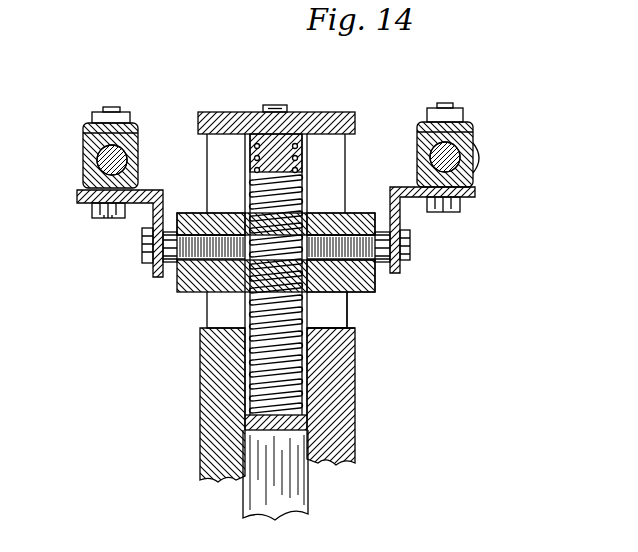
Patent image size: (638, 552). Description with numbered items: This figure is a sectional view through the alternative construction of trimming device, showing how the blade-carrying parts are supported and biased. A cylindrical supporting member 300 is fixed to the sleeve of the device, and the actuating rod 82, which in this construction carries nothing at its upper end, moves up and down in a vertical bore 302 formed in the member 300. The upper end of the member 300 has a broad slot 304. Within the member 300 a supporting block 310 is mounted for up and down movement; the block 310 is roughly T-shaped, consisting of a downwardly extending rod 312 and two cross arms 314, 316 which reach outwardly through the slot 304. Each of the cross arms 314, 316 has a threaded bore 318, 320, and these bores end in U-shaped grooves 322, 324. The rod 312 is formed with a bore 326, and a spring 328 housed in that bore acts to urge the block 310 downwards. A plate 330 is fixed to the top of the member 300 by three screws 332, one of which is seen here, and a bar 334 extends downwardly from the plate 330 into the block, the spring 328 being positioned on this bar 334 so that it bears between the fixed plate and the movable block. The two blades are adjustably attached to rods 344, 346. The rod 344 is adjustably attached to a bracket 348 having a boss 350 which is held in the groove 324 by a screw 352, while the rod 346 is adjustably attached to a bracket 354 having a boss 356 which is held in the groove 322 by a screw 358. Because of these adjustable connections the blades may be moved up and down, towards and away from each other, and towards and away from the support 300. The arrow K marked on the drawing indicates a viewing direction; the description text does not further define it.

The actuating rod 82 is at (300, 500).
The cylindrical supporting member 300 is at (200, 467).
The vertical bore 302 is at (303, 456).
The broad slot 304 is at (347, 308).
The supporting block 310 is at (193, 300).
The downwardly extending rod 312 is at (305, 365).
The cross arm 314 is at (178, 283).
The cross arm 316 is at (372, 283).
The threaded bore 318 is at (340, 214).
The threaded bore 320 is at (233, 215).
The U-shaped groove 322 is at (378, 229).
The U-shaped groove 324 is at (178, 234).
The bore 326 is at (296, 392).
The spring 328 is at (356, 333).
The plate 330 is at (355, 118).
The screw 332 is at (273, 105).
The bar 334 is at (292, 160).
The rod 344 is at (100, 160).
The rod 346 is at (479, 157).
The bracket 348 is at (79, 195).
The boss 350 is at (169, 226).
The screw 352 is at (142, 238).
The bracket 354 is at (448, 189).
The boss 356 is at (390, 248).
The screw 358 is at (410, 234).
The viewing direction arrow K is at (98, 536).